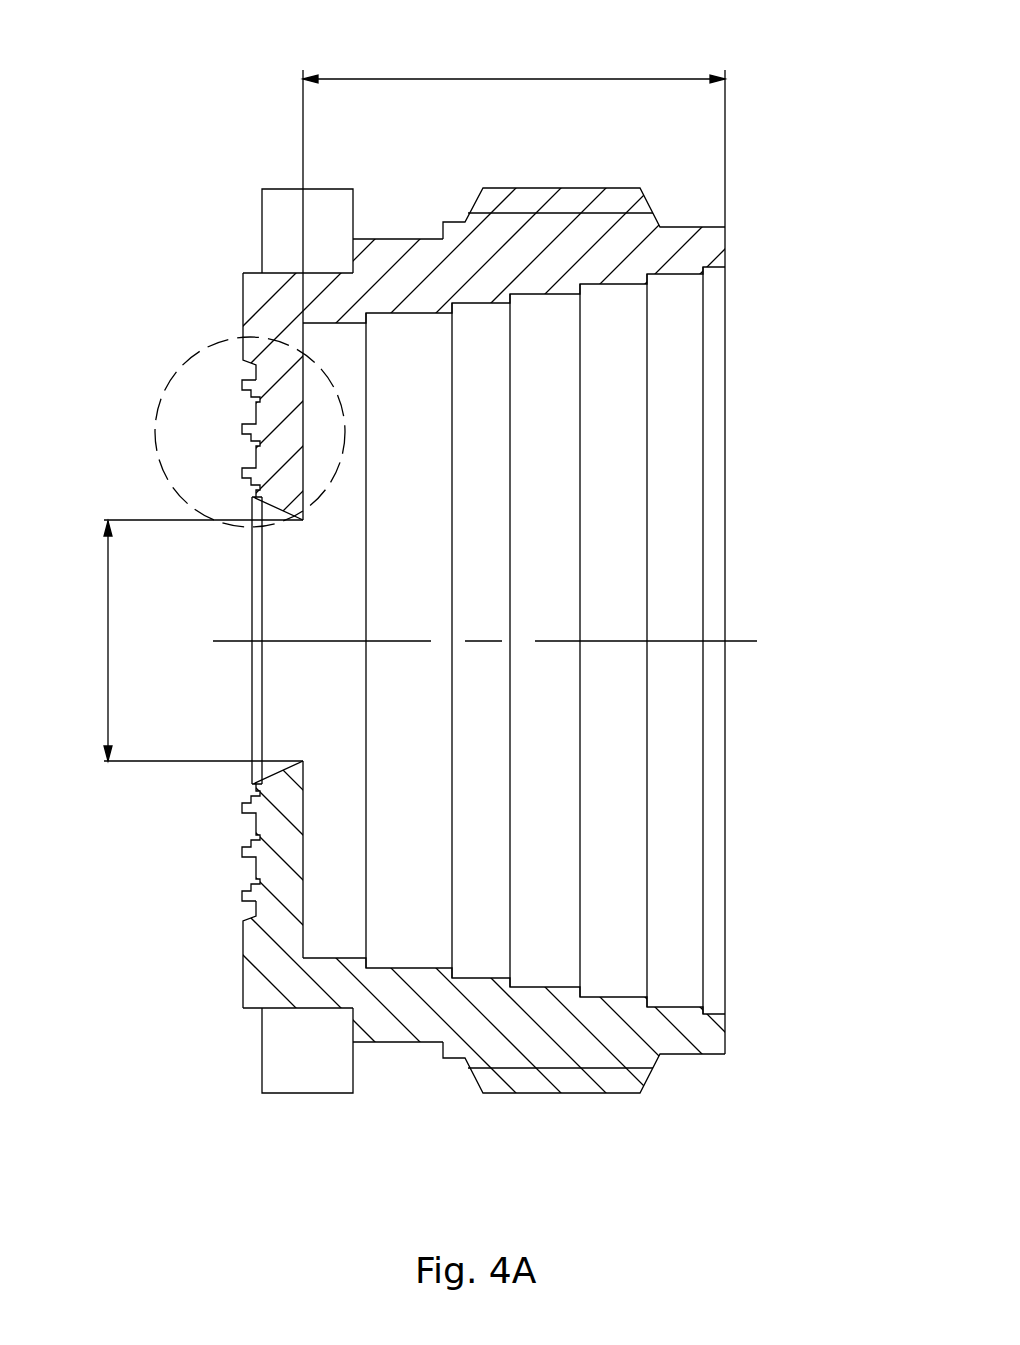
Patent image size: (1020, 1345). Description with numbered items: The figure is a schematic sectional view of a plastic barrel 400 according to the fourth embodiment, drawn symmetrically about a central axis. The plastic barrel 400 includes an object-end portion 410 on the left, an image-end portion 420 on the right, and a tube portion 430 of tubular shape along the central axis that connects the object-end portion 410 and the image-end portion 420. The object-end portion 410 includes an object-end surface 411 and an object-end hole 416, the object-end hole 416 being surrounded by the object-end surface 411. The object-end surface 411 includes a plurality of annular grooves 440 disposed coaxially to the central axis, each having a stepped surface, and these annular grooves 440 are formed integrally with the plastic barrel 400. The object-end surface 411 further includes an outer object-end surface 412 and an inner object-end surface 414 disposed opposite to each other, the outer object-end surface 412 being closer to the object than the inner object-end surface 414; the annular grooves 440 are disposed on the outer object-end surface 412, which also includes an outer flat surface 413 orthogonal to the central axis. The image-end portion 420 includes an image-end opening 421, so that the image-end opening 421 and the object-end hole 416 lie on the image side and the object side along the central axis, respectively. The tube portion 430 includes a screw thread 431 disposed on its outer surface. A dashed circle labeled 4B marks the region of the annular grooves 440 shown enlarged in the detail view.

The plastic barrel 400 is at (220, 40).
The object-end portion 410 is at (242, 316).
The object-end surface 411 is at (253, 500).
The outer object-end surface 412 is at (253, 787).
The outer flat surface 413 is at (243, 966).
The inner object-end surface 414 is at (305, 397).
The object-end hole 416 is at (272, 684).
The image-end portion 420 is at (726, 247).
The image-end opening 421 is at (713, 481).
The tube portion 430 is at (693, 226).
The screw thread 431 is at (560, 188).
The annular grooves 440 is at (253, 405).
The detail view region 4B is at (157, 403).